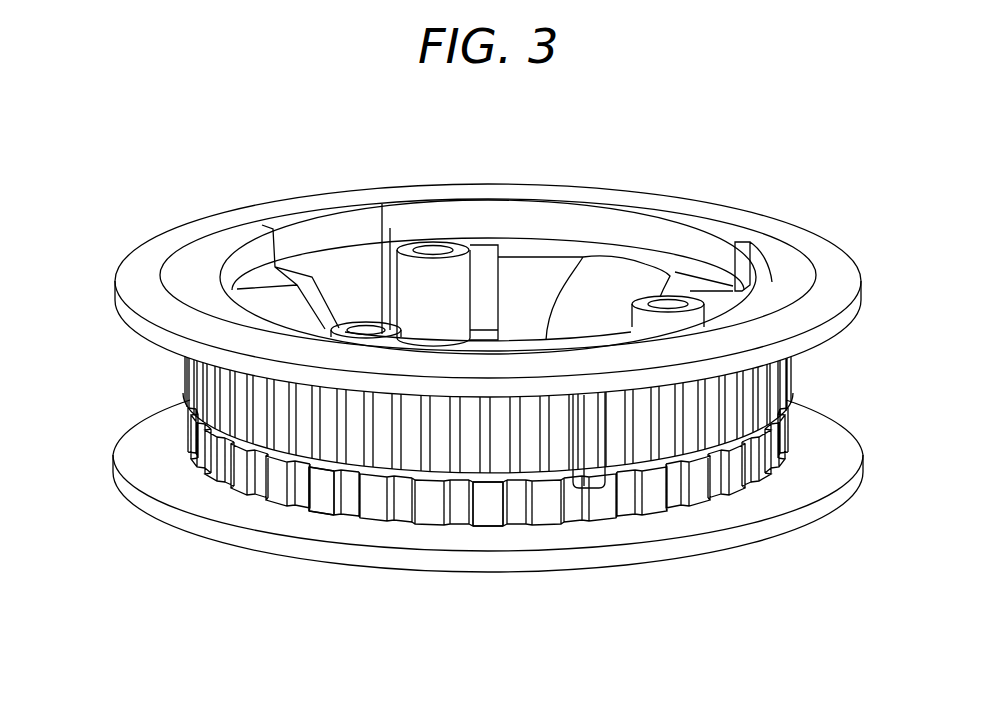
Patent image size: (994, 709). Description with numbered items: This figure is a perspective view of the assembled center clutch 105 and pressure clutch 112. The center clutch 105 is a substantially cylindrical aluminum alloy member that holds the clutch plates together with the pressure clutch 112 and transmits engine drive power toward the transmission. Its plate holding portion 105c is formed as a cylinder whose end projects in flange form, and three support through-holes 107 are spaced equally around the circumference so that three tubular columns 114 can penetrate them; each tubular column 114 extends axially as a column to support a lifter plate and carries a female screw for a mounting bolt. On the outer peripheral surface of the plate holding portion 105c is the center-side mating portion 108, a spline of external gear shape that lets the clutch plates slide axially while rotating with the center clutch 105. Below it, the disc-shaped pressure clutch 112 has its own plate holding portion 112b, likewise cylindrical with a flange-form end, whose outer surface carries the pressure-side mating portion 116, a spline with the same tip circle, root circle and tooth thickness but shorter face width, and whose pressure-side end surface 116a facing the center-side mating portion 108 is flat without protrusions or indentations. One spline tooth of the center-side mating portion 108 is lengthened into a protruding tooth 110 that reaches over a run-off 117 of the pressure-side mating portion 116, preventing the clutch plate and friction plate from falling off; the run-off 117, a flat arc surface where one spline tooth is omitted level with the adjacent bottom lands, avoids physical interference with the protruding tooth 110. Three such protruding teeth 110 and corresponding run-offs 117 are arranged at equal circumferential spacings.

The center clutch 105 is at (232, 211).
The plate holding portion 105c is at (577, 197).
The support through-hole 107 is at (484, 257).
The center-side mating portion 108 is at (797, 370).
The protruding tooth 110 is at (598, 465).
The pressure clutch 112 is at (126, 426).
The plate holding portion 112b is at (133, 456).
The tubular column 114 is at (407, 248).
The pressure-side mating portion 116 is at (820, 441).
The pressure-side end surface 116a is at (323, 458).
The run-off 117 is at (568, 498).